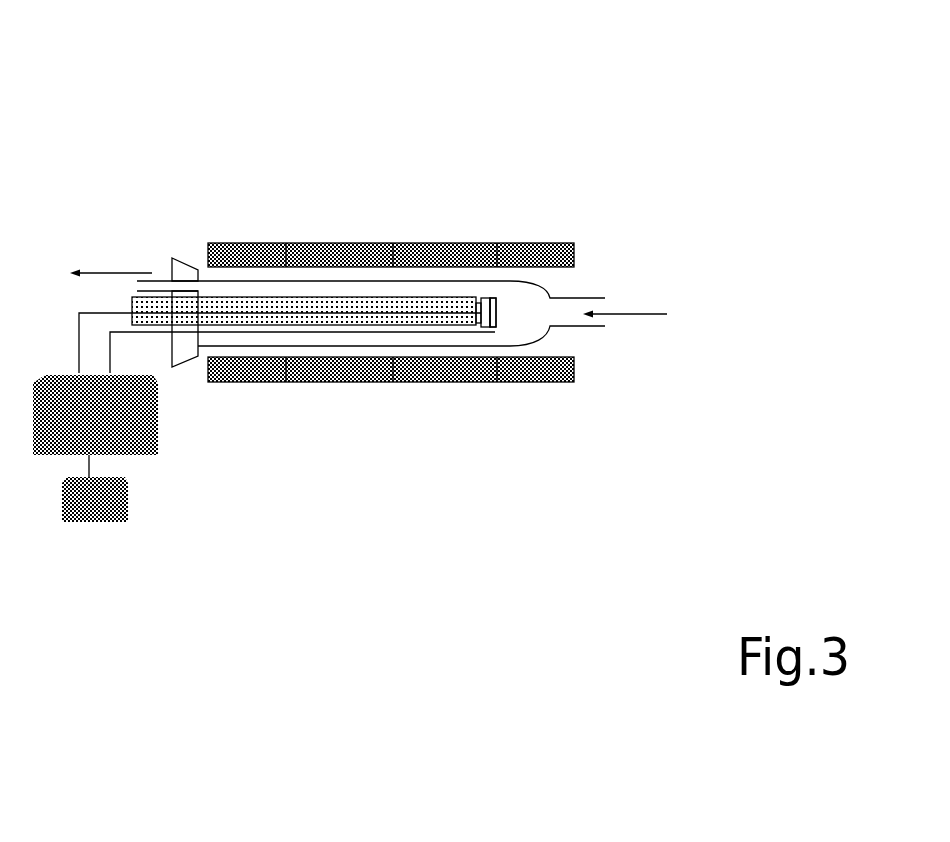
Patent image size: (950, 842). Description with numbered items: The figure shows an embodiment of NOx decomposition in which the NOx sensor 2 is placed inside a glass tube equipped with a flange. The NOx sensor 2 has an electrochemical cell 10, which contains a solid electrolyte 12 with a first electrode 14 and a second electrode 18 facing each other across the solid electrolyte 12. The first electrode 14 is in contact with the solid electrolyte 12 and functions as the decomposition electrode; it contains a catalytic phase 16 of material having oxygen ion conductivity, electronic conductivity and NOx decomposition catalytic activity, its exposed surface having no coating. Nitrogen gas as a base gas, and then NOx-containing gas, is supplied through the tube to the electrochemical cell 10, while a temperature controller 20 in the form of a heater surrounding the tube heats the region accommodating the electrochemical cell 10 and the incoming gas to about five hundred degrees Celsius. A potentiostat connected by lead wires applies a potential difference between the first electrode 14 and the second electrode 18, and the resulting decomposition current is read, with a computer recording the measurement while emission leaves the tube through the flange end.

The electrochemical cell 10 is at (556, 132).
The temperature controller 20 is at (368, 245).
The NOx sensor 2 is at (550, 193).
The second electrode 18 is at (477, 302).
The solid electrolyte 12 is at (487, 298).
The first electrode 14 is at (494, 298).
The catalytic phase 16 is at (546, 263).